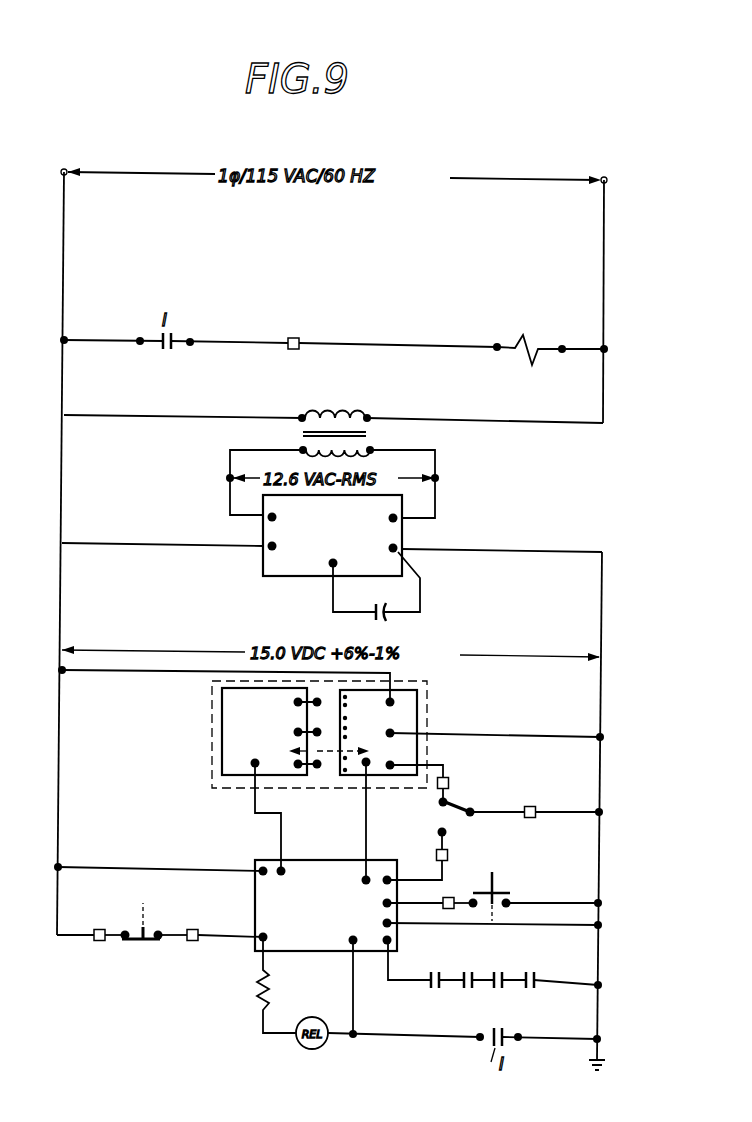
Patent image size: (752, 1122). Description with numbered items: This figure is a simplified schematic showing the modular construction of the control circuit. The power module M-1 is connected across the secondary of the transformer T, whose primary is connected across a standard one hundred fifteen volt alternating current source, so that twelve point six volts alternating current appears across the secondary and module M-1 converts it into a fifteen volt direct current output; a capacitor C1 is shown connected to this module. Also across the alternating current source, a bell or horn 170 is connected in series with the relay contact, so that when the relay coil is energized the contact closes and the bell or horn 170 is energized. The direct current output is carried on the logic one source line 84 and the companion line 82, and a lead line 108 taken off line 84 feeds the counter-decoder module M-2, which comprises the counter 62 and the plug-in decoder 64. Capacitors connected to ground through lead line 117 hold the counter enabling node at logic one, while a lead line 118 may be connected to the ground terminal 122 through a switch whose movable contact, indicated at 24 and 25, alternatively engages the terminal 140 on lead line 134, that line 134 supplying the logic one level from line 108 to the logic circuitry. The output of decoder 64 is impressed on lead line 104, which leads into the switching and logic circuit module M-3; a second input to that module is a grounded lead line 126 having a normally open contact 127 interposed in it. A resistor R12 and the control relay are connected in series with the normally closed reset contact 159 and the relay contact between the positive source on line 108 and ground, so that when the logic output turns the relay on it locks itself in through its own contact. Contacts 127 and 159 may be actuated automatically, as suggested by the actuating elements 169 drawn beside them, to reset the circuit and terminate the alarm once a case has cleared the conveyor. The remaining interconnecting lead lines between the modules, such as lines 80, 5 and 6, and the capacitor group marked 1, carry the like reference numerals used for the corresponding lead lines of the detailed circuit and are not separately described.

The bell or horn 170 is at (545, 323).
The transformer T is at (376, 441).
The power module M-1 is at (402, 537).
The capacitor C1 is at (376, 595).
The logic "1" source line 84 is at (159, 542).
The power supply line 82 is at (525, 552).
The lead line 108 is at (138, 678).
The counter-decoder module M-2 is at (430, 724).
The decoder 64 is at (222, 741).
The counter 62 is at (417, 700).
The lead line 117 is at (510, 734).
The lead line 118 is at (447, 768).
The line from counter to switching module 80 is at (360, 814).
The lead line 104 is at (252, 795).
The terminal 122 is at (447, 803).
The switch contact 25 is at (448, 807).
The switch blade 24 is at (467, 825).
The grounded lead line 126 is at (570, 903).
The lead line 134 is at (442, 868).
The terminal 140 is at (447, 835).
The switching and logic circuit module M-3 is at (257, 947).
The line 5 is at (178, 864).
The reset contact 159 is at (141, 942).
The switch actuator 169 is at (150, 929).
The contact 127 is at (507, 893).
The line 6 is at (517, 925).
The capacitor bank 1 is at (412, 979).
The resistor R12 is at (274, 984).